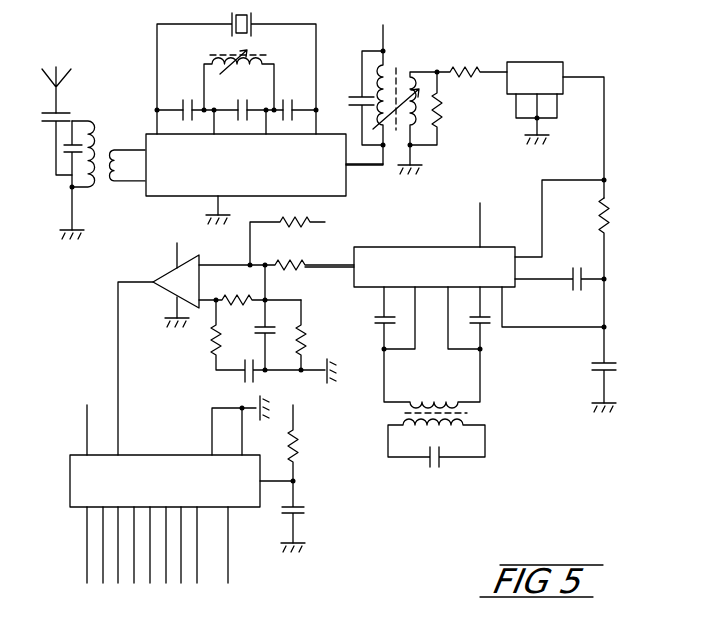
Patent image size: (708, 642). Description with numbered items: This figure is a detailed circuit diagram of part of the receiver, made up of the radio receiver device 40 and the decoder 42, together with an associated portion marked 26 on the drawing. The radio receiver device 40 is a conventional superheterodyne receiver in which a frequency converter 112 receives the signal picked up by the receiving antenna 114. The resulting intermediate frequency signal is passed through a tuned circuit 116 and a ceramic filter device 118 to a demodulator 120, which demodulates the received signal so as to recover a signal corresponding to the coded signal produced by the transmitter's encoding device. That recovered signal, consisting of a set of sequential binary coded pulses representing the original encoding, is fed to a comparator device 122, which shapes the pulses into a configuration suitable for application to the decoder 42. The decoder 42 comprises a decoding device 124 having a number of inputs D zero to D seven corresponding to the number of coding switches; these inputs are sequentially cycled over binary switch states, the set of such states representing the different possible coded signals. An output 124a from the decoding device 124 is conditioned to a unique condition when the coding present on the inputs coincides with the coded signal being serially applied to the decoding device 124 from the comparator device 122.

The receiving antenna 114 is at (98, 133).
The frequency converter 112 is at (338, 189).
The tuned circuit 116 is at (397, 73).
The ceramic filter device 118 is at (559, 87).
The demodulator 120 is at (447, 252).
The comparator device 122 is at (160, 290).
The decoding device 124 is at (248, 497).
The output 124a is at (227, 568).
The receiver 26 is at (556, 432).
The radio receiver device 40 is at (398, 496).
The decoder 42 is at (67, 510).